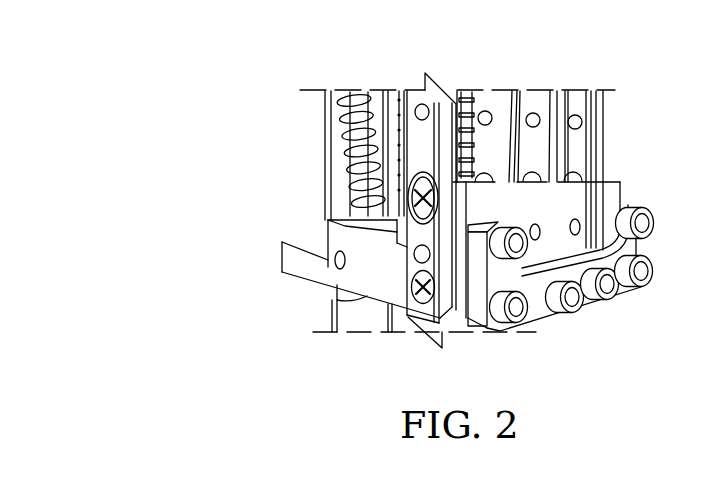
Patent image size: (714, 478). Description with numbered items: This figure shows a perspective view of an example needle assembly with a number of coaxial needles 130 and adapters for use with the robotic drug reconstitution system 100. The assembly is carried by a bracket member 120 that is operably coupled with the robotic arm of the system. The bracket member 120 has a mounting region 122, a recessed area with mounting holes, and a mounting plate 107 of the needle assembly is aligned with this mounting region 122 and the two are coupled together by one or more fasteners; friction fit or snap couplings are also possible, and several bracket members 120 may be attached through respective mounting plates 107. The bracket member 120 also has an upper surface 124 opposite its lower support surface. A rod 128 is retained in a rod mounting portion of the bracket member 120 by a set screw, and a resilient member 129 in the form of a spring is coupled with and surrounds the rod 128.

The drug reconstitution system 100 is at (198, 84).
The mounting plate 107 is at (483, 90).
The bracket member 120 is at (287, 258).
The mounting region 122 is at (448, 198).
The upper surface 124 is at (300, 243).
The rod 128 is at (358, 98).
The resilient member 129 is at (345, 123).
The coaxial needle 130 is at (332, 330).